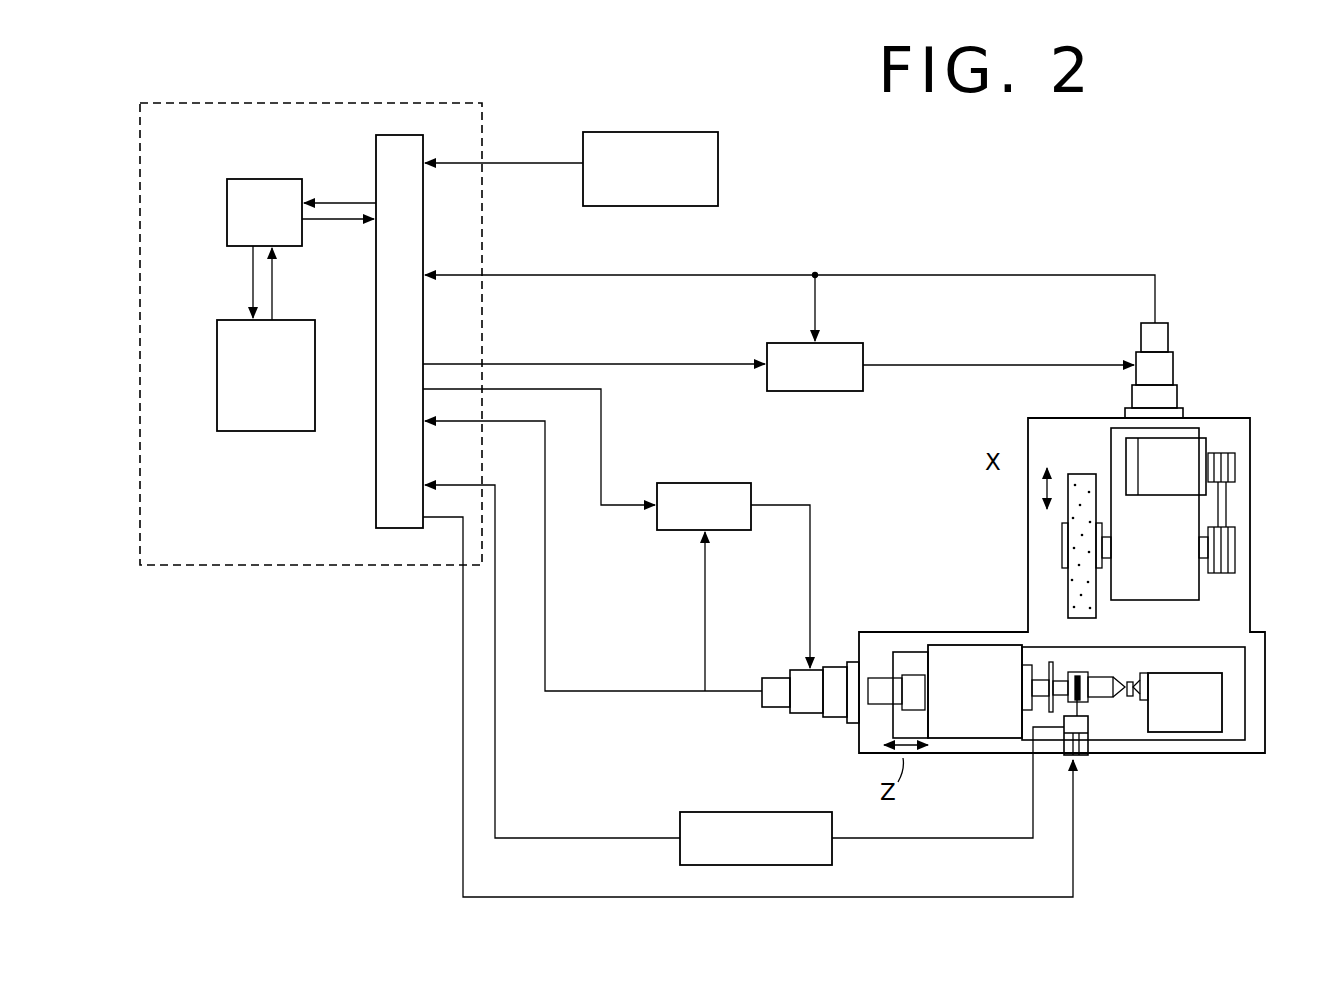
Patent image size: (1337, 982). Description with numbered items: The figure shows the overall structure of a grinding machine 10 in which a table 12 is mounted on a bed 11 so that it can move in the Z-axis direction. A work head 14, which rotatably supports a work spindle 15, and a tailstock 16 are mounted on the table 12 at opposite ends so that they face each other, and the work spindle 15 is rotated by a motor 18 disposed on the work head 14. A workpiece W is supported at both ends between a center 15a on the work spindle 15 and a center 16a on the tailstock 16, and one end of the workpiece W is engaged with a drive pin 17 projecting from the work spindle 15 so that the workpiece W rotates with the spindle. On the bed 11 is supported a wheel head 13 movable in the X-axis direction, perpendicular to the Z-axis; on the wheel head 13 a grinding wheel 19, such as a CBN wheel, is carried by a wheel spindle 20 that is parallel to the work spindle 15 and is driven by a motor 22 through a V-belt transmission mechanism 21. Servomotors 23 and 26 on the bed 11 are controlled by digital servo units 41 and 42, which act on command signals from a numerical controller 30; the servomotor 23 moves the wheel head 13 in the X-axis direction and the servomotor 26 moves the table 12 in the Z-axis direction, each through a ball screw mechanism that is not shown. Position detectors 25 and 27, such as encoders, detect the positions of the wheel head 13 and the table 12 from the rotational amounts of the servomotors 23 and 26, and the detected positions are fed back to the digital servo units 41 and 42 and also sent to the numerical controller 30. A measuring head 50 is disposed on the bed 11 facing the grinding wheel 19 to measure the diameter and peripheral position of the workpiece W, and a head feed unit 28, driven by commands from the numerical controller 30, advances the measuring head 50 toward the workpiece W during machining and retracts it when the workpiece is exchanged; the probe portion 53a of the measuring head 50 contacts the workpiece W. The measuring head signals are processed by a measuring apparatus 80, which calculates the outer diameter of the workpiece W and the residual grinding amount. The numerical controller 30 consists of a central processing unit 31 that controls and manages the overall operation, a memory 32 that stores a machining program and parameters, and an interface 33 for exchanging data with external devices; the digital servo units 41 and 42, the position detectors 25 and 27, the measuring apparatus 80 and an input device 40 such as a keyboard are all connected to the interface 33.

The grinding machine 10 is at (1236, 398).
The bed 11 is at (1225, 618).
The table 12 is at (1237, 753).
The wheel head 13 is at (1190, 433).
The work head 14 is at (970, 725).
The work spindle 15 is at (1035, 712).
The center 15a is at (1041, 686).
The tailstock 16 is at (1188, 710).
The center 16a is at (1130, 680).
The drive pin 17 is at (1040, 665).
The motor 18 is at (912, 687).
The grinding wheel 19 is at (1063, 593).
The wheel spindle 20 is at (1105, 548).
The V-belt transmission mechanism 21 is at (1225, 500).
The motor 22 is at (1166, 480).
The servomotor 23 is at (1160, 370).
The position detector 25 is at (1157, 337).
The servomotor 26 is at (808, 713).
The position detector 27 is at (776, 707).
The head feed unit 28 is at (1082, 760).
The numerical controller 30 is at (388, 100).
The central processing unit (CPU) 31 is at (227, 198).
The memory 32 is at (217, 338).
The interface 33 is at (376, 467).
The input device 40 is at (718, 157).
The digital servo unit 41 is at (789, 391).
The digital servo unit 42 is at (677, 530).
The measuring head 50 is at (1083, 720).
The measuring probe 53a is at (1077, 676).
The measuring apparatus 80 is at (680, 814).
The workpiece W is at (1103, 690).